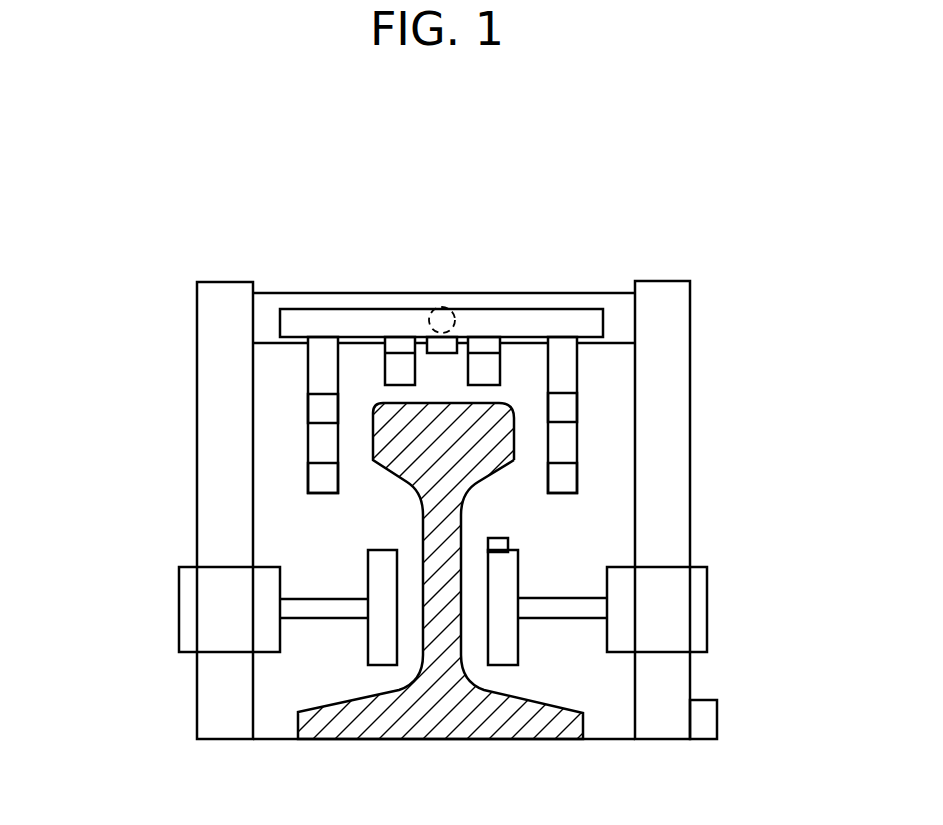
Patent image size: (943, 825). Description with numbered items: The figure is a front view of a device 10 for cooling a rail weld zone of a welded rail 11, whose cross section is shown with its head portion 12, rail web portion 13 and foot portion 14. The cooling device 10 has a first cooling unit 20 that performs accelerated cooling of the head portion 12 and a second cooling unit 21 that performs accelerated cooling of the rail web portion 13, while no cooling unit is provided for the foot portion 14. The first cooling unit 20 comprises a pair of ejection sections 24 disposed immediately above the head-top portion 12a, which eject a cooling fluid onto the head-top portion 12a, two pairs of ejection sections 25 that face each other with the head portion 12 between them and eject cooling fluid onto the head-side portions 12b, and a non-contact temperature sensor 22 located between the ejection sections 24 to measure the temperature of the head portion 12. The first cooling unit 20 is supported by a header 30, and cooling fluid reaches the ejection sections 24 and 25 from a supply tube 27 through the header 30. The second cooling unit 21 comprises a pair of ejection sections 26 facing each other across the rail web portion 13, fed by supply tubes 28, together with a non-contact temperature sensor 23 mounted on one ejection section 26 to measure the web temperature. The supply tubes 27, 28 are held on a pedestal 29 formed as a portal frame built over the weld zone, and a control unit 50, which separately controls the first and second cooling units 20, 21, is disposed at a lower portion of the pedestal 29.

The device for cooling a rail weld zone 10 is at (87, 358).
The rail 11 is at (420, 627).
The head portion 12 is at (462, 190).
The head-top portion 12a is at (440, 402).
The head-side portions 12b is at (518, 425).
The rail web portion 13 is at (450, 543).
The foot portion 14 is at (517, 708).
The first cooling unit 20 is at (293, 385).
The second cooling unit 21 is at (312, 560).
The non-contact temperature sensor 22 is at (437, 345).
The non-contact temperature sensor 23 is at (493, 540).
The ejection sections 24 is at (400, 367).
The ejection sections 25 is at (318, 402).
The ejection sections 26 is at (377, 557).
The supply tube 27 is at (430, 306).
The supply tubes 28 is at (337, 613).
The pedestal 29 is at (667, 360).
The header 30 is at (587, 322).
The control unit 50 is at (712, 725).